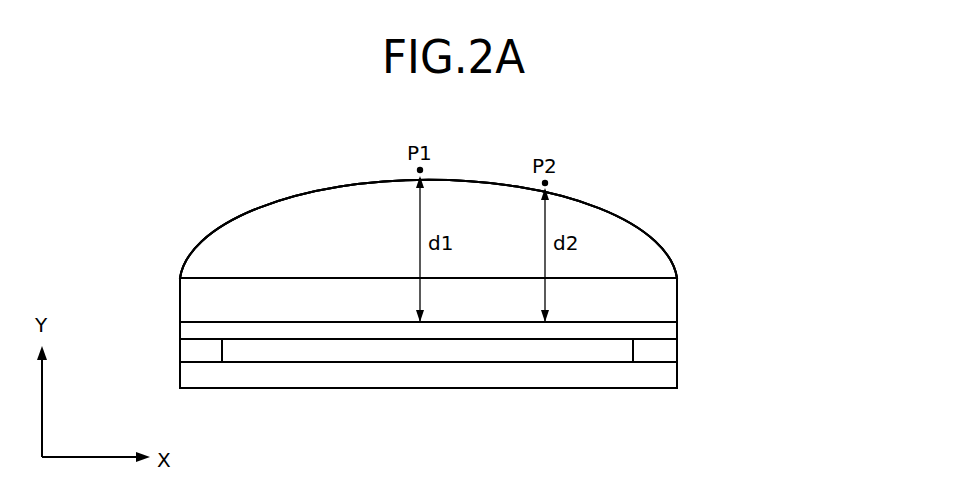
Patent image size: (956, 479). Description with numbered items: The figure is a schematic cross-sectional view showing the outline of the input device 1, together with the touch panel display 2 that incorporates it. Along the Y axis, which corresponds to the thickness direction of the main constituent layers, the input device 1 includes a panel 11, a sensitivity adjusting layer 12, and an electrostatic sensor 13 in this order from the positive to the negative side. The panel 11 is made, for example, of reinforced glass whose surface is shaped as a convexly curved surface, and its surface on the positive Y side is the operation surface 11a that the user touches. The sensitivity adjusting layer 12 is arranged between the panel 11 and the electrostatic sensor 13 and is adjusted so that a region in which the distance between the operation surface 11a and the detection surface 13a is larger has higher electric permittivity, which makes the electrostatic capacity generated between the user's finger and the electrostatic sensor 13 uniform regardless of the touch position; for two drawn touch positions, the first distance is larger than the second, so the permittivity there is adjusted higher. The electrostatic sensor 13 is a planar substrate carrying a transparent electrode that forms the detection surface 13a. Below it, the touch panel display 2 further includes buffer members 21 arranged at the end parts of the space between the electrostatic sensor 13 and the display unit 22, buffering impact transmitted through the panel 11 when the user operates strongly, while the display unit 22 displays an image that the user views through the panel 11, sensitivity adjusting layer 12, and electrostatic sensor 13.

The input device 1 is at (740, 176).
The touch panel display 2 is at (785, 249).
The panel 11 is at (643, 248).
The operation surface 11a is at (633, 216).
The sensitivity adjusting layer 12 is at (640, 288).
The electrostatic sensor 13 is at (658, 335).
The detection surface 13a is at (638, 325).
The buffer members 21 is at (660, 352).
The display unit 22 is at (660, 377).